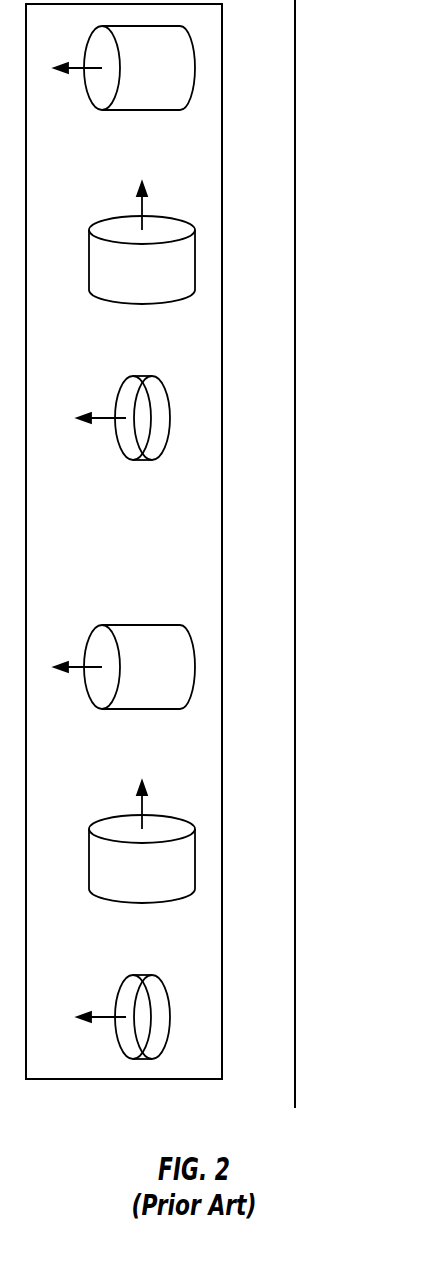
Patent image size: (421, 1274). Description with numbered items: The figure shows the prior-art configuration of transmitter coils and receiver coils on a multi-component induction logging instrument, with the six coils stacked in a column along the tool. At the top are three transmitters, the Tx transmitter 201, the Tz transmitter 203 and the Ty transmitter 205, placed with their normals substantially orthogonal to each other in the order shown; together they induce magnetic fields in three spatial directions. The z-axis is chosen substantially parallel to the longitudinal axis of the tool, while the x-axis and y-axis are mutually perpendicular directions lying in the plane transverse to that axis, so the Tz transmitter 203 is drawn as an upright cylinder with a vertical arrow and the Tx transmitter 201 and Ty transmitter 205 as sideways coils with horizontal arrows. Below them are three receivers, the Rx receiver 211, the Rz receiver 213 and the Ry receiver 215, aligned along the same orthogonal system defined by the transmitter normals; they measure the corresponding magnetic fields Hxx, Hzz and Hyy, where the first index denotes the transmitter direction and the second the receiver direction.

The Tx transmitter 201 is at (288, 68).
The Tz transmitter 203 is at (288, 243).
The Ty transmitter 205 is at (288, 418).
The Rx receiver 211 is at (288, 667).
The Rz receiver 213 is at (288, 843).
The Ry receiver 215 is at (288, 1017).